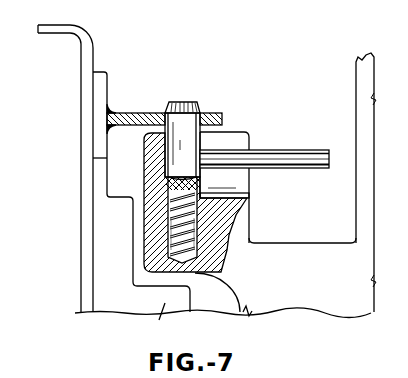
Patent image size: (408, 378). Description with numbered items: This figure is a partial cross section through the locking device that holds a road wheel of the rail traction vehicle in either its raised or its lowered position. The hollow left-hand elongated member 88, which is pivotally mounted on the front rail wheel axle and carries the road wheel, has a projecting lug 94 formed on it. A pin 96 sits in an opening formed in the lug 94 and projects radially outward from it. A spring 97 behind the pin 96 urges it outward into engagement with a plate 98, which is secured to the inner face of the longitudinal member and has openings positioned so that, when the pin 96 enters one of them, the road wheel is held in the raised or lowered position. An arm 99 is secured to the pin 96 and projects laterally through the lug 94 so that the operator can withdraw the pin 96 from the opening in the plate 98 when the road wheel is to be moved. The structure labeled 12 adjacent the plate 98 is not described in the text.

The bracket 12 is at (50, 28).
The plate 98 is at (134, 111).
The pin 96 is at (199, 103).
The arm 99 is at (272, 152).
The spring 97 is at (243, 194).
The lug 94 is at (229, 227).
The elongated member 88 is at (330, 304).